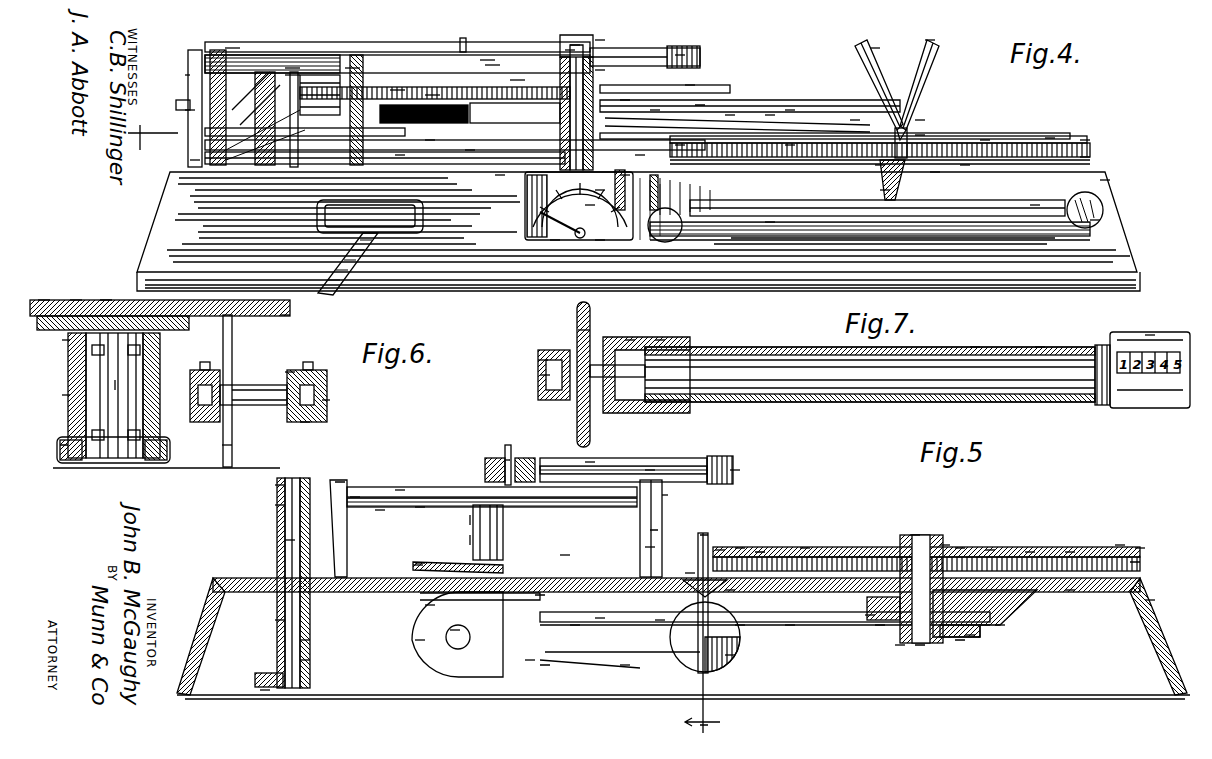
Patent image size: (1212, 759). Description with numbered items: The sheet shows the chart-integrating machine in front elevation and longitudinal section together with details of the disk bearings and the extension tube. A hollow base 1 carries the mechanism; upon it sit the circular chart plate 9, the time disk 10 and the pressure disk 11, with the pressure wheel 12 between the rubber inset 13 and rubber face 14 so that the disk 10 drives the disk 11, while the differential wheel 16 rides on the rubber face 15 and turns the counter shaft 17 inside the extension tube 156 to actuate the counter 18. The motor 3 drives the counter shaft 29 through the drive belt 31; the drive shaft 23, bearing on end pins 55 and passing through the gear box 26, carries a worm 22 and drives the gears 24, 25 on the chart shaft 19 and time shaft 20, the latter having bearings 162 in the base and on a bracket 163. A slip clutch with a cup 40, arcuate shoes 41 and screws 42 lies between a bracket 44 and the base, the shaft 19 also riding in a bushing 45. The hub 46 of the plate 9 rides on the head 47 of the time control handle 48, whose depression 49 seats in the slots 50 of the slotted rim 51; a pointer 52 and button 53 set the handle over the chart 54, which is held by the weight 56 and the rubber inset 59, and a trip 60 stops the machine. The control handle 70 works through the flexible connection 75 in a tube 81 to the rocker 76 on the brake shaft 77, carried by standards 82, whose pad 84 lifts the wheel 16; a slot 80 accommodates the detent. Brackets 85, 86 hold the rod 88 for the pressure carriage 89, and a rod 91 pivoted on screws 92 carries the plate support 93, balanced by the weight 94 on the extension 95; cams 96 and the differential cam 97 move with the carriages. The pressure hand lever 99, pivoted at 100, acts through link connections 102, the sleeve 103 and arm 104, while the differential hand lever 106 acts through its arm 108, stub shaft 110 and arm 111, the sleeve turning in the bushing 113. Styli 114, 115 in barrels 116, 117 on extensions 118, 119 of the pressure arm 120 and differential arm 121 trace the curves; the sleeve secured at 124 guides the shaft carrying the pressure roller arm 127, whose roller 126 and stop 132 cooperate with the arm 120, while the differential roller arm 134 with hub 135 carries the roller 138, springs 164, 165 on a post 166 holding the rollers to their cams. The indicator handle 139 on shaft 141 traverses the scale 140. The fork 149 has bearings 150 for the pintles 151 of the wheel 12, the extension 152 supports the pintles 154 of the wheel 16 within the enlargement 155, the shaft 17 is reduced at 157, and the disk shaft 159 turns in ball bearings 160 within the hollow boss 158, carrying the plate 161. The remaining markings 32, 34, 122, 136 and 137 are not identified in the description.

In FIG. 4, the hollow base 1 is at (1105, 180).
In FIG. 5, the hollow base 1 is at (1150, 600).
In FIG. 5, the motor 3 is at (420, 640).
In FIG. 4, the circular chart plate 9 is at (1085, 140).
In FIG. 5, the circular chart plate 9 is at (720, 550).
In FIG. 5, the time disk 10 is at (413, 565).
In FIG. 4, the pressure disk 11 is at (490, 65).
In FIG. 6, the pressure disk 11 is at (40, 300).
In FIG. 5, the pressure disk 11 is at (355, 497).
In FIG. 6, the pressure wheel 12 is at (222, 450).
In FIG. 5, the pressure wheel 12 is at (565, 555).
In FIG. 4, the rubber inset 13 is at (680, 145).
In FIG. 5, the rubber inset 13 is at (420, 563).
In FIG. 6, the rubber face 14 is at (290, 315).
In FIG. 5, the rubber face 14 is at (380, 510).
In FIG. 4, the rubber face 15 is at (147, 138).
In FIG. 6, the rubber face 15 is at (75, 300).
In FIG. 5, the rubber face 15 is at (420, 507).
In FIG. 7, the differential wheel 16 is at (578, 330).
In FIG. 5, the differential wheel 16 is at (505, 460).
In FIG. 7, the counter shaft 17 is at (1040, 347).
In FIG. 4, the counter 18 is at (680, 55).
In FIG. 7, the counter 18 is at (1150, 335).
In FIG. 5, the counter 18 is at (735, 470).
In FIG. 5, the chart shaft 19 is at (703, 725).
In FIG. 5, the time shaft 20 is at (530, 660).
In FIG. 5, the worm 22 is at (600, 618).
In FIG. 5, the drive shaft 23 is at (790, 625).
In FIG. 5, the gear 24 is at (1000, 625).
In FIG. 5, the gear 25 is at (575, 625).
In FIG. 5, the gear box 26 is at (740, 625).
In FIG. 5, the counter shaft 29 is at (730, 655).
In FIG. 5, the drive belt 31 is at (625, 665).
In FIG. 5, the pin 32 is at (690, 573).
In FIG. 5, the fork 34 is at (730, 590).
In FIG. 5, the cup 40 is at (870, 615).
In FIG. 5, the arcuate shoes 41 is at (880, 625).
In FIG. 5, the screw 42 is at (900, 645).
In FIG. 5, the bracket 44 is at (970, 635).
In FIG. 5, the bushing 45 is at (960, 548).
In FIG. 5, the hub 46 is at (945, 545).
In FIG. 5, the head 47 is at (990, 550).
In FIG. 4, the time control handle 48 is at (880, 165).
In FIG. 5, the time control handle 48 is at (1030, 552).
In FIG. 5, the depression 49 is at (1070, 552).
In FIG. 4, the slots 50 is at (985, 140).
In FIG. 5, the slots 50 is at (1140, 562).
In FIG. 4, the slotted rim 51 is at (1085, 157).
In FIG. 5, the slotted rim 51 is at (740, 548).
In FIG. 4, the pointer 52 is at (965, 165).
In FIG. 5, the pointer 52 is at (1120, 545).
In FIG. 4, the button 53 is at (935, 172).
In FIG. 5, the button 53 is at (1140, 548).
In FIG. 4, the chart 54 is at (1050, 138).
In FIG. 5, the end pins 55 is at (455, 630).
In FIG. 4, the weight 56 is at (855, 120).
In FIG. 5, the weight 56 is at (915, 535).
In FIG. 5, the rubber inset 59 is at (805, 548).
In FIG. 5, the trip 60 is at (1070, 590).
In FIG. 4, the control handle 70 is at (885, 190).
In FIG. 5, the flexible connection 75 is at (650, 547).
In FIG. 4, the rocker 76 is at (463, 38).
In FIG. 5, the rocker 76 is at (683, 500).
In FIG. 5, the brake shaft 77 is at (400, 490).
In FIG. 4, the slot 80 is at (290, 68).
In FIG. 5, the tube 81 is at (660, 620).
In FIG. 5, the standards 82 is at (653, 530).
In FIG. 4, the pad 84 is at (515, 80).
In FIG. 5, the pad 84 is at (590, 462).
In FIG. 4, the bracket 85 is at (185, 75).
In FIG. 4, the bracket 86 is at (575, 45).
In FIG. 4, the rod 88 is at (232, 48).
In FIG. 4, the pressure carriage 89 is at (400, 155).
In FIG. 4, the rod 91 is at (185, 110).
In FIG. 4, the screws 92 is at (176, 105).
In FIG. 4, the plate support 93 is at (430, 140).
In FIG. 5, the plate support 93 is at (470, 540).
In FIG. 4, the weight 94 is at (395, 90).
In FIG. 4, the extension 95 is at (430, 95).
In FIG. 4, the cams 96 is at (190, 160).
In FIG. 4, the differential cam 97 is at (292, 75).
In FIG. 4, the pressure hand lever 99 is at (770, 222).
In FIG. 4, the pivot 100 is at (1095, 220).
In FIG. 5, the link connections 102 is at (300, 660).
In FIG. 5, the sleeve 103 is at (300, 640).
In FIG. 5, the arm 104 is at (275, 505).
In FIG. 4, the differential hand lever 106 is at (1035, 205).
In FIG. 5, the arm 108 is at (265, 690).
In FIG. 5, the stub shaft 110 is at (285, 540).
In FIG. 5, the arm 111 is at (275, 487).
In FIG. 5, the bushing 113 is at (277, 620).
In FIG. 4, the stylus 114 is at (920, 120).
In FIG. 4, the stylus 115 is at (920, 135).
In FIG. 4, the steel barrel 116 is at (875, 48).
In FIG. 4, the steel barrel 117 is at (930, 40).
In FIG. 4, the extension 118 is at (770, 115).
In FIG. 4, the extension 119 is at (790, 110).
In FIG. 4, the pressure arm 120 is at (700, 105).
In FIG. 4, the differential arm 121 is at (730, 115).
In FIG. 4, the rack 122 is at (790, 145).
In FIG. 4, the securing point 124 is at (570, 50).
In FIG. 4, the pressure roller 126 is at (320, 200).
In FIG. 4, the pressure roller arm 127 is at (470, 150).
In FIG. 4, the stop 132 is at (500, 175).
In FIG. 4, the differential roller arm 134 is at (487, 60).
In FIG. 4, the hub 135 is at (600, 40).
In FIG. 4, the tube 136 is at (655, 110).
In FIG. 4, the dial support 137 is at (617, 185).
In FIG. 4, the roller 138 is at (350, 68).
In FIG. 4, the indicator handle 139 is at (555, 240).
In FIG. 4, the scale 140 is at (590, 205).
In FIG. 4, the shaft 141 is at (600, 240).
In FIG. 6, the fork 149 is at (290, 372).
In FIG. 6, the bearings 150 is at (327, 400).
In FIG. 6, the pintles 151 is at (305, 422).
In FIG. 7, the extension 152 is at (538, 360).
In FIG. 7, the pintles 154 is at (540, 375).
In FIG. 7, the enlargement 155 is at (660, 340).
In FIG. 4, the extension tube 156 is at (600, 70).
In FIG. 7, the extension tube 156 is at (975, 347).
In FIG. 5, the extension tube 156 is at (660, 461).
In FIG. 7, the reduced end 157 is at (630, 340).
In FIG. 6, the hollow boss 158 is at (65, 395).
In FIG. 6, the shaft 159 is at (120, 385).
In FIG. 5, the shaft 159 is at (470, 520).
In FIG. 6, the ball bearings 160 is at (62, 445).
In FIG. 6, the plate 161 is at (65, 340).
In FIG. 5, the bearings 162 is at (545, 665).
In FIG. 5, the bracket 163 is at (430, 605).
In FIG. 4, the spring 164 is at (690, 85).
In FIG. 4, the spring 165 is at (640, 155).
In FIG. 4, the post 166 is at (640, 170).